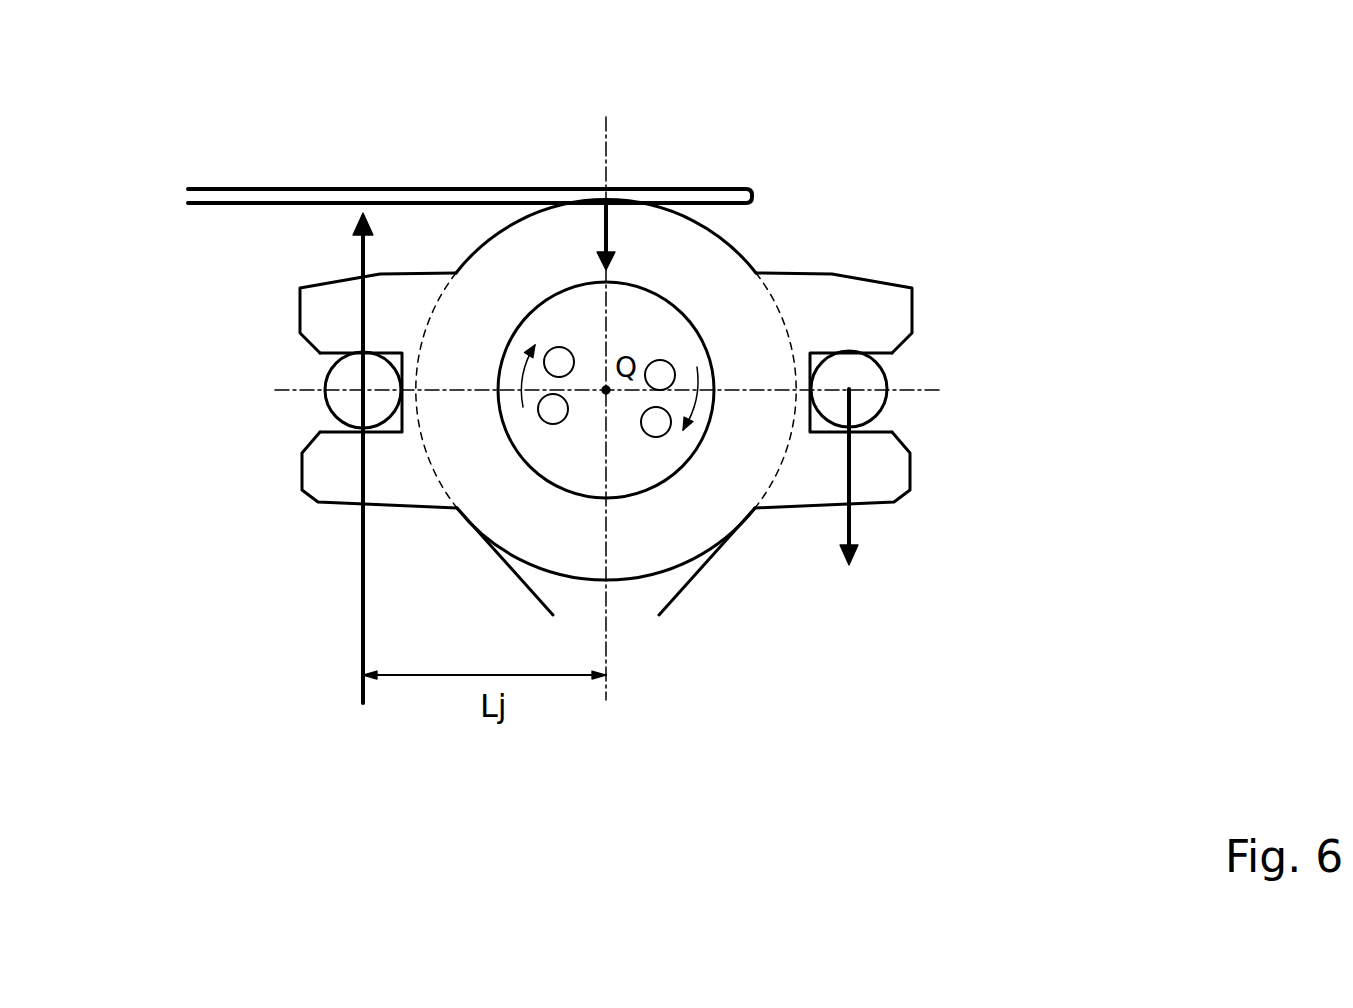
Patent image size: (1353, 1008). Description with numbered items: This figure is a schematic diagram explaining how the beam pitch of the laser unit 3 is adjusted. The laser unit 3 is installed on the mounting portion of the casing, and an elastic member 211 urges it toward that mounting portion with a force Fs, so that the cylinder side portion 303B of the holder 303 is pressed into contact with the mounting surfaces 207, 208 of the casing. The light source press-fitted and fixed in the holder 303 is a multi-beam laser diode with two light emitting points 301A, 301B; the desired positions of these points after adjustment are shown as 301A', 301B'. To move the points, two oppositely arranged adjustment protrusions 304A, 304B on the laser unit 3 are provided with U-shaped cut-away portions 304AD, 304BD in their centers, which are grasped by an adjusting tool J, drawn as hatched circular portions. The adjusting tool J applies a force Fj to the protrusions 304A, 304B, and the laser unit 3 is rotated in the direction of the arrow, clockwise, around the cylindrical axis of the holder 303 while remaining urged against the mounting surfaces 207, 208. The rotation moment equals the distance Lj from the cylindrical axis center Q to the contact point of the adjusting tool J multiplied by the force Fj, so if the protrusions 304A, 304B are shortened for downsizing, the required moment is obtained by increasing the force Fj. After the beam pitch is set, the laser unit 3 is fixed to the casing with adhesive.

The laser unit 3 is at (610, 390).
The elastic member 211 is at (742, 187).
The holder 303 is at (652, 227).
The cylinder side portion 303B is at (630, 575).
The desired light emitting point position 301A' is at (476, 208).
The light emitting point 301A is at (340, 515).
The light emitting point 301B is at (845, 270).
The desired light emitting point position 301B' is at (865, 317).
The adjustment protrusion 304A is at (340, 478).
The adjustment protrusion 304B is at (875, 322).
The U-shaped cut-away portion 304AD is at (386, 353).
The U-shaped cut-away portion 304BD is at (818, 350).
The adjusting tool J is at (347, 407).
The mounting surface 208 is at (507, 557).
The mounting surface 207 is at (693, 575).